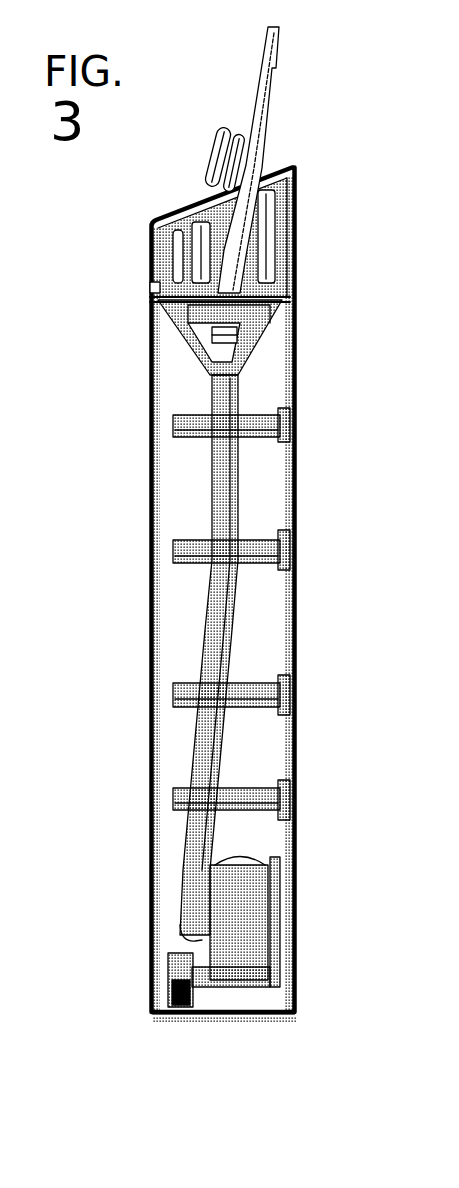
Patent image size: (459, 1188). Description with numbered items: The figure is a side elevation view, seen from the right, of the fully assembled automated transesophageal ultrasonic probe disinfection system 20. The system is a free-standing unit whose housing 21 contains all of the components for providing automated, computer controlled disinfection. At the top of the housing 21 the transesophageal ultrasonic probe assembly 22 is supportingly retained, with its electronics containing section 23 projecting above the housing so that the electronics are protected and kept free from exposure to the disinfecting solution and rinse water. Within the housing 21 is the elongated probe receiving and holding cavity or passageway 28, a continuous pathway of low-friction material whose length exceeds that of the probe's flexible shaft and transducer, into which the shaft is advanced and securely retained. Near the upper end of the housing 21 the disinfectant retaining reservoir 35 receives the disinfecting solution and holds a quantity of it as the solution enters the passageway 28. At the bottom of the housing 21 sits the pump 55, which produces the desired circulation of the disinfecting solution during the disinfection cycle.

The transesophageal ultrasonic probe disinfection system 20 is at (67, 417).
The housing 21 is at (300, 355).
The transesophageal ultrasonic probe assembly 22 is at (262, 118).
The electronics containing section 23 is at (253, 160).
The probe receiving and holding cavity or passageway 28 is at (240, 487).
The disinfectant retaining reservoir 35 is at (422, 180).
The pump 55 is at (415, 803).